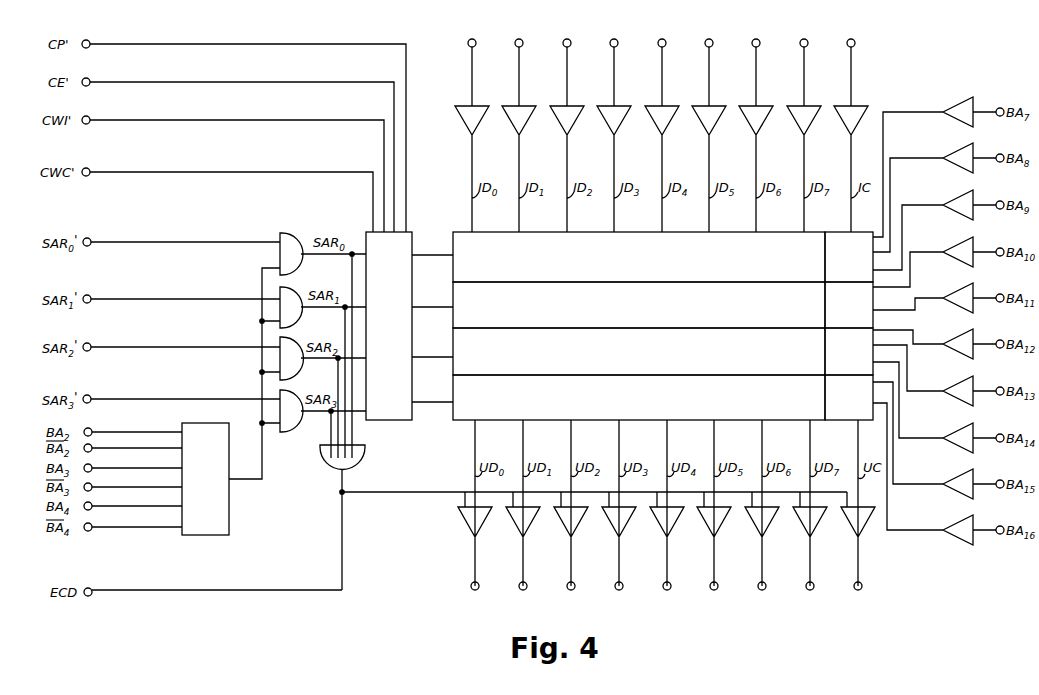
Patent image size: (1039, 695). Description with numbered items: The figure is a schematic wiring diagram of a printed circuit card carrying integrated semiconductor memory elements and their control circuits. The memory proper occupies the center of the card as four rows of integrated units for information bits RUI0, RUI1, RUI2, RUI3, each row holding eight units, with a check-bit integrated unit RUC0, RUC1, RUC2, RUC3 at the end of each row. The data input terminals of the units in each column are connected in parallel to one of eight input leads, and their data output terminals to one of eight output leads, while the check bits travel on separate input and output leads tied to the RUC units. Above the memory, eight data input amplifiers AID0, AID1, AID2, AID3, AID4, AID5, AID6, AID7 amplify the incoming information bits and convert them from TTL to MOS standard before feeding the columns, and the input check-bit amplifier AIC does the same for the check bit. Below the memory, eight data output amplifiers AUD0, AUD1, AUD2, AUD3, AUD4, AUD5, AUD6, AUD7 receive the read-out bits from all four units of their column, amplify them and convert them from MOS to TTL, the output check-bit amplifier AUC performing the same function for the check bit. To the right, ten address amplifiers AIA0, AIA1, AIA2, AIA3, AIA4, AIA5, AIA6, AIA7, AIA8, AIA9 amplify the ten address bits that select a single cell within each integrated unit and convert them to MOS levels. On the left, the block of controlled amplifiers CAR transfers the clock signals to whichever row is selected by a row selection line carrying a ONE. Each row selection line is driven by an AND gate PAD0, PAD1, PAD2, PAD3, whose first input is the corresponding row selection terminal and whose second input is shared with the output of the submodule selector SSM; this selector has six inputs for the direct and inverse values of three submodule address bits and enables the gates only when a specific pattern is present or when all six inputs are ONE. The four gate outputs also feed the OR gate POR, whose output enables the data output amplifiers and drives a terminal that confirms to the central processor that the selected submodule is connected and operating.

The controlled amplifiers CAR is at (389, 326).
The submodule selector SSM is at (222, 479).
The OR gate POR is at (365, 458).
The AND gate PAD0 is at (280, 254).
The AND gate PAD1 is at (280, 309).
The AND gate PAD2 is at (280, 360).
The AND gate PAD3 is at (280, 412).
The row of integrated units for information bits RUI0 is at (639, 257).
The row of integrated units for information bits RUI1 is at (639, 305).
The row of integrated units for information bits RUI2 is at (639, 351).
The row of integrated units for information bits RUI3 is at (639, 397).
The integrated unit for check bits RUC0 is at (849, 257).
The integrated unit for check bits RUC1 is at (849, 305).
The integrated unit for check bits RUC2 is at (849, 351).
The integrated unit for check bits RUC3 is at (849, 397).
The data input amplifier AID0 is at (480, 135).
The data input amplifier AID1 is at (526, 135).
The data input amplifier AID2 is at (575, 135).
The data input amplifier AID3 is at (622, 135).
The data input amplifier AID4 is at (670, 135).
The data input amplifier AID5 is at (717, 135).
The data input amplifier AID6 is at (764, 135).
The data input amplifier AID7 is at (812, 135).
The input check-bit amplifier AIC is at (856, 135).
The data output amplifier AUD0 is at (485, 505).
The data output amplifier AUD1 is at (533, 505).
The data output amplifier AUD2 is at (581, 505).
The data output amplifier AUD3 is at (629, 505).
The data output amplifier AUD4 is at (677, 505).
The data output amplifier AUD5 is at (724, 505).
The data output amplifier AUD6 is at (772, 505).
The data output amplifier AUD7 is at (820, 505).
The output check-bit amplifier AUC is at (865, 505).
The address amplifier AIA0 is at (938, 161).
The address amplifier AIA1 is at (938, 191).
The address amplifier AIA2 is at (938, 224).
The address amplifier AIA3 is at (938, 256).
The address amplifier AIA4 is at (938, 292).
The address amplifier AIA5 is at (938, 338).
The address amplifier AIA6 is at (938, 375).
The address amplifier AIA7 is at (938, 407).
The address amplifier AIA8 is at (938, 440).
The address amplifier AIA9 is at (938, 474).